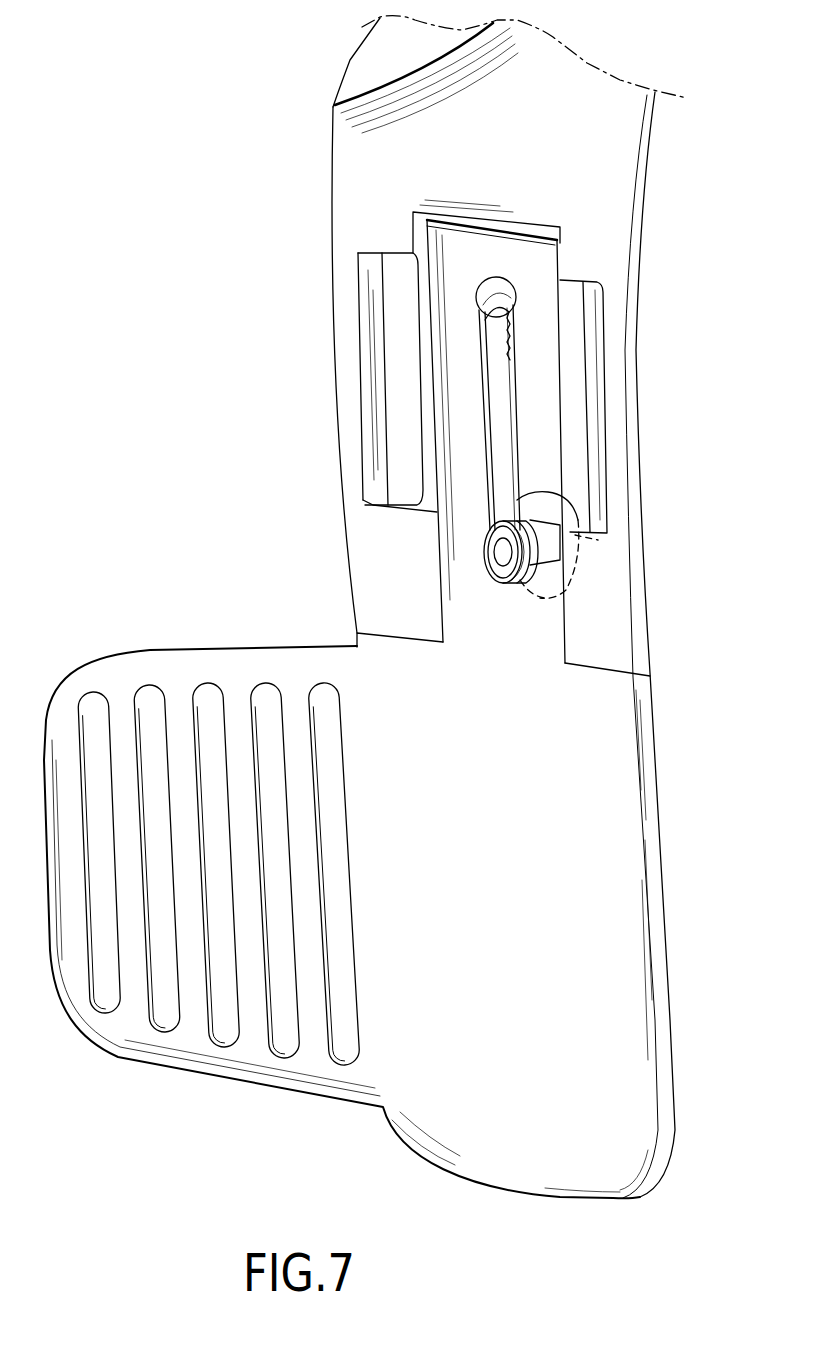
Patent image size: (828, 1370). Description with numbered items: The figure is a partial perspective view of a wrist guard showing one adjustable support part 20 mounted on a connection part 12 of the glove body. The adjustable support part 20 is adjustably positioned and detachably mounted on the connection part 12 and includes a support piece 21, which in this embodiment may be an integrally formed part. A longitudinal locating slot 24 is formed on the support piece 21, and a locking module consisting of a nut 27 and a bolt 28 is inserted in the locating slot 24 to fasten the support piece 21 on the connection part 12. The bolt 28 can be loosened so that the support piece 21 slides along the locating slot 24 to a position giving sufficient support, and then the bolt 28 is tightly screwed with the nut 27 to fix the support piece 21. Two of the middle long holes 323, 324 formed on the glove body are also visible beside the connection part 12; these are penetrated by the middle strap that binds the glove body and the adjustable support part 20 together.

The connection part 12 is at (617, 273).
The adjustable support part 20 is at (560, 391).
The support piece 21 is at (457, 570).
The longitudinal locating slot 24 is at (510, 403).
The nut 27 is at (513, 578).
The bolt 28 is at (598, 545).
The middle long hole 323 is at (398, 332).
The middle long hole 324 is at (588, 308).